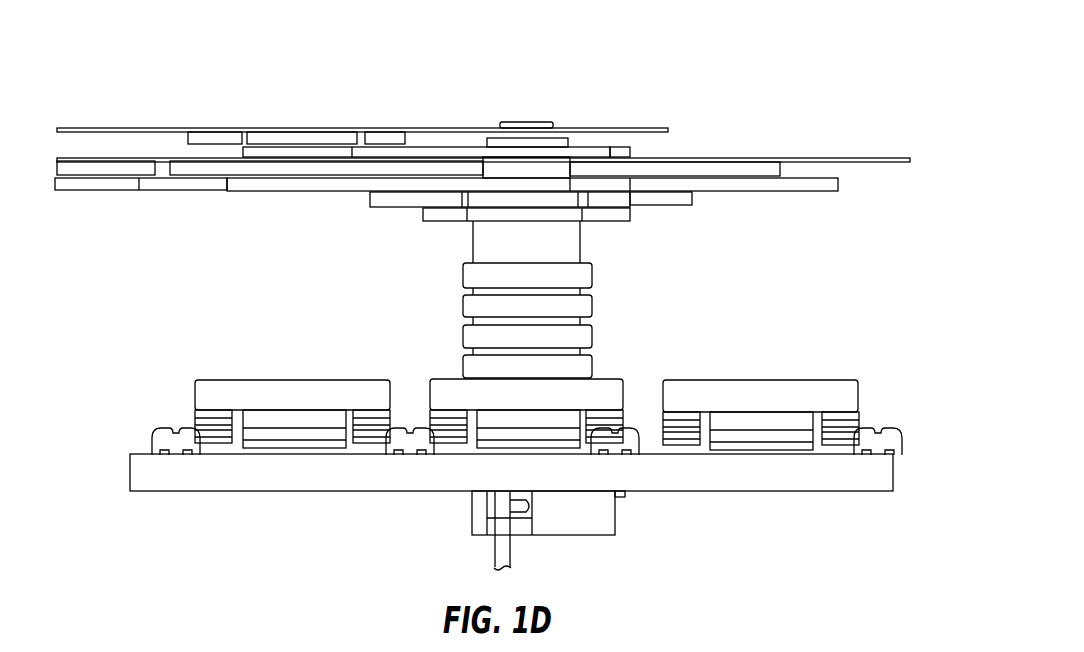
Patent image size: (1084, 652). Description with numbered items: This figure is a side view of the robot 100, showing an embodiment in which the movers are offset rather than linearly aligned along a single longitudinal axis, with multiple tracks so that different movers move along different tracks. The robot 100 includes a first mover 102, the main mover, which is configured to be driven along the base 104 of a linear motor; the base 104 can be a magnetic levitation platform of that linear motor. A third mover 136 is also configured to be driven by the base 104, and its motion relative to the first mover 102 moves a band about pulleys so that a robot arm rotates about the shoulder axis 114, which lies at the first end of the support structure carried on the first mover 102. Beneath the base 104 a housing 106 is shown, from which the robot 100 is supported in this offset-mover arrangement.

The robot 100 is at (894, 62).
The shoulder axis 114 is at (538, 122).
The first mover 102 is at (605, 379).
The third mover 136 is at (237, 379).
The base 104 is at (893, 475).
The drive housing 106 is at (616, 519).